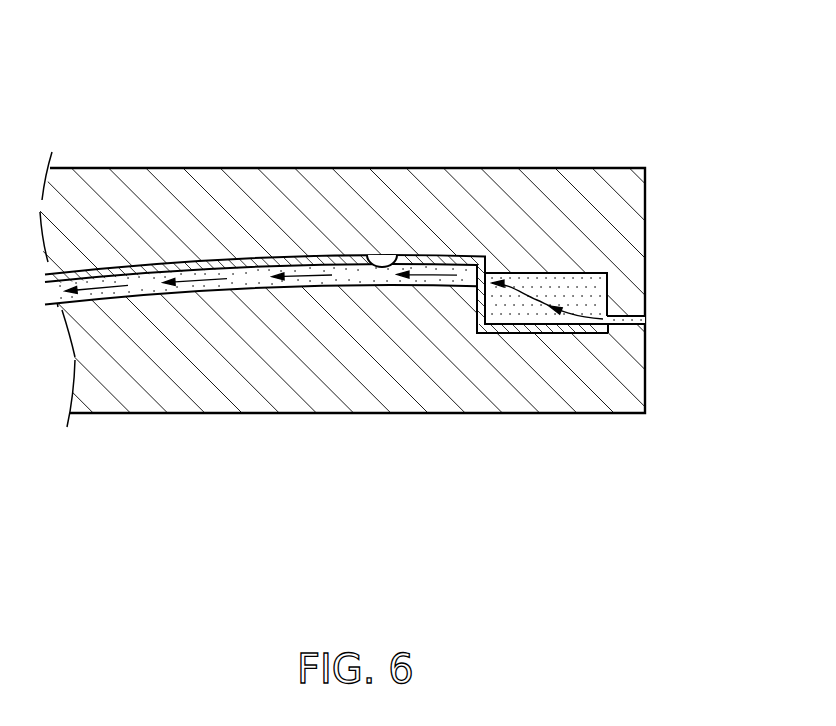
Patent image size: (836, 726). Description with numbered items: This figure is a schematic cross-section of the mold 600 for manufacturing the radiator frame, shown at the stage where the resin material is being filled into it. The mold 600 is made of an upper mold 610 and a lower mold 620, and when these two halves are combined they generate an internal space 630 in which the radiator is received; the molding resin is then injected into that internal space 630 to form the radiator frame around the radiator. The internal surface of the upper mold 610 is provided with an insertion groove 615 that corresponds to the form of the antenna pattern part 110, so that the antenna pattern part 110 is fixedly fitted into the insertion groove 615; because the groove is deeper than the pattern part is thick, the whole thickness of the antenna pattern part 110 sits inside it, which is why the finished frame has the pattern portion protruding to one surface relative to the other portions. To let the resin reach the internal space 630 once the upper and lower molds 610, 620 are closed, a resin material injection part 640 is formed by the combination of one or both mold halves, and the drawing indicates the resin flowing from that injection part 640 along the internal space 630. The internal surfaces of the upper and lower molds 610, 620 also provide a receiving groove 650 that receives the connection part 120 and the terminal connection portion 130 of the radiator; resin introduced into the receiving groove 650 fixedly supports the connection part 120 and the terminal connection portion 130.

The mold for manufacturing the radiator frame 600 is at (548, 47).
The upper mold 610 is at (128, 182).
The lower mold 620 is at (158, 403).
The antenna pattern part 110 is at (320, 258).
The internal space 630 is at (246, 274).
The connection part 120 is at (474, 297).
The insertion groove 615 is at (398, 256).
The terminal connection portion 130 is at (560, 331).
The receiving groove 650 is at (488, 307).
The resin material injection part 640 is at (620, 320).